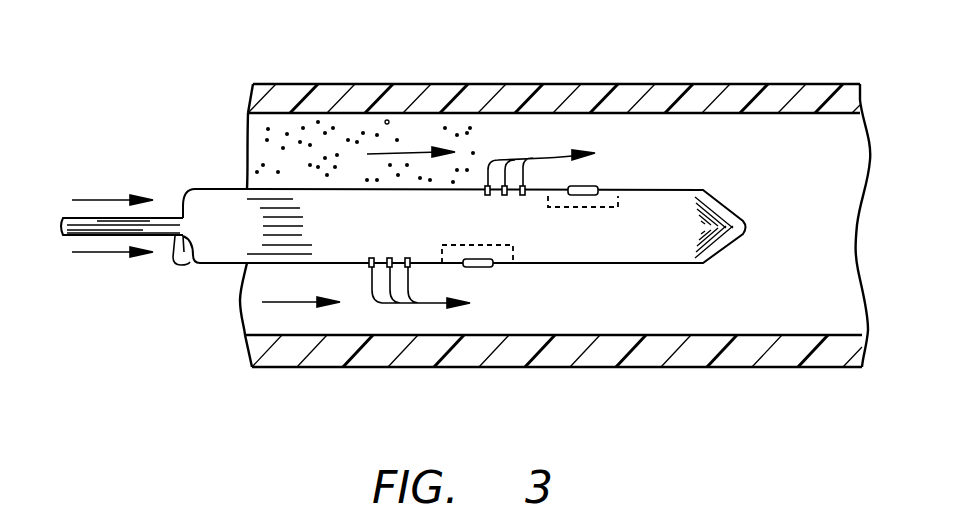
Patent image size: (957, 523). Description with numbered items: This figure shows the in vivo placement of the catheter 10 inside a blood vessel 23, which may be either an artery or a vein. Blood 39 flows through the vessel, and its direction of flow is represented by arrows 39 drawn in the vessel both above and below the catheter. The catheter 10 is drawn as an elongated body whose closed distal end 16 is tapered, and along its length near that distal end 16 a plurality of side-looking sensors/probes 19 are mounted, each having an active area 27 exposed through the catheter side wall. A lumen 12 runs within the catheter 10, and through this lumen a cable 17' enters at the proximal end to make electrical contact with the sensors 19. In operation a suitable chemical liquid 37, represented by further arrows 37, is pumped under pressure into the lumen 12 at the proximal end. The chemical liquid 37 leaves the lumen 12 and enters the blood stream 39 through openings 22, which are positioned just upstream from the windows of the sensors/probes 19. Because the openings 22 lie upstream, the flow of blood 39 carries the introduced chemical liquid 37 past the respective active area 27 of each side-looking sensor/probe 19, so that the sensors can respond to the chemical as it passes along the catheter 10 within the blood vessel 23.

The catheter 10 is at (194, 189).
The lumen 12 is at (175, 262).
The distal end 16 is at (733, 207).
The cable 17' is at (110, 191).
The side-looking sensor/probe 19 is at (618, 200).
The openings 22 is at (523, 206).
The blood vessel 23 is at (833, 140).
The active area 27 is at (597, 207).
The chemical liquid 37 is at (117, 198).
The blood flow 39 is at (370, 154).